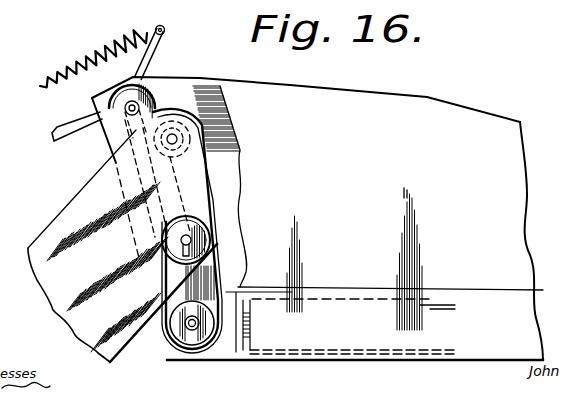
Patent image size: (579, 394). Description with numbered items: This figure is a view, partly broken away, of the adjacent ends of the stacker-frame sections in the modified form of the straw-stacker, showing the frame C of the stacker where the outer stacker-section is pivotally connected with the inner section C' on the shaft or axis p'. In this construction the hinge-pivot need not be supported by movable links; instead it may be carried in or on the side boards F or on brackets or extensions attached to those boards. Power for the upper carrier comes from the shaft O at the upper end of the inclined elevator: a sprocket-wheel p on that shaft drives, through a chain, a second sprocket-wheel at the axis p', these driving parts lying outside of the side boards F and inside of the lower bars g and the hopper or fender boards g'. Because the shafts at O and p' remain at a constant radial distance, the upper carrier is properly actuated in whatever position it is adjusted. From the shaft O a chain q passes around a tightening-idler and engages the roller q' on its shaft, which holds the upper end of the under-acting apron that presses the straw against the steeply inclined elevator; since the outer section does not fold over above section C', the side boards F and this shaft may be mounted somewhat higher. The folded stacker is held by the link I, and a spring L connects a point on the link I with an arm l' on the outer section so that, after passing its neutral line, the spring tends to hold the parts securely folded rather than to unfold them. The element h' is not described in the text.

The stacker section C is at (317, 235).
The section C' is at (69, 246).
The spring L is at (40, 86).
The arm l' is at (155, 53).
The link I is at (52, 134).
The side board F is at (137, 307).
The chain q is at (107, 267).
The roller q' is at (232, 104).
The shaft O is at (192, 236).
The sprocket-wheel p is at (140, 253).
The shaft or axis p' is at (172, 241).
The hopper or fender boards g' is at (539, 205).
The lower bars g is at (496, 343).
The lever h' is at (431, 318).